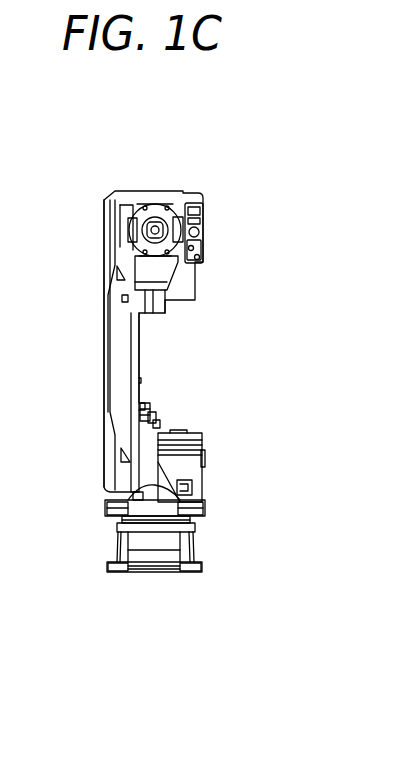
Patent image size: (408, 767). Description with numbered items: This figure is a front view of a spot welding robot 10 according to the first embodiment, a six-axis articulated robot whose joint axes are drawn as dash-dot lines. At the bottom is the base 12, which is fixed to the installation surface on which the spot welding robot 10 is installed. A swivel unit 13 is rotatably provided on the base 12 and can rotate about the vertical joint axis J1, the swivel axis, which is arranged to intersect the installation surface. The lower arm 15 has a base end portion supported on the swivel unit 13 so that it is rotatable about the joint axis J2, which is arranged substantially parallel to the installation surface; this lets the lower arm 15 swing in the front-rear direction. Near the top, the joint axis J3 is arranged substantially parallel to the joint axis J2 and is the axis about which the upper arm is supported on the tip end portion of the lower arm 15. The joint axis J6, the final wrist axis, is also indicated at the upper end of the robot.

The spot welding robot 10 is at (176, 165).
The base 12 is at (190, 553).
The swivel unit 13 is at (193, 468).
The lower arm 15 is at (123, 356).
The joint axis J1 is at (157, 152).
The joint axis J2 is at (240, 455).
The joint axis J3 is at (240, 273).
The joint axis J6 is at (104, 201).